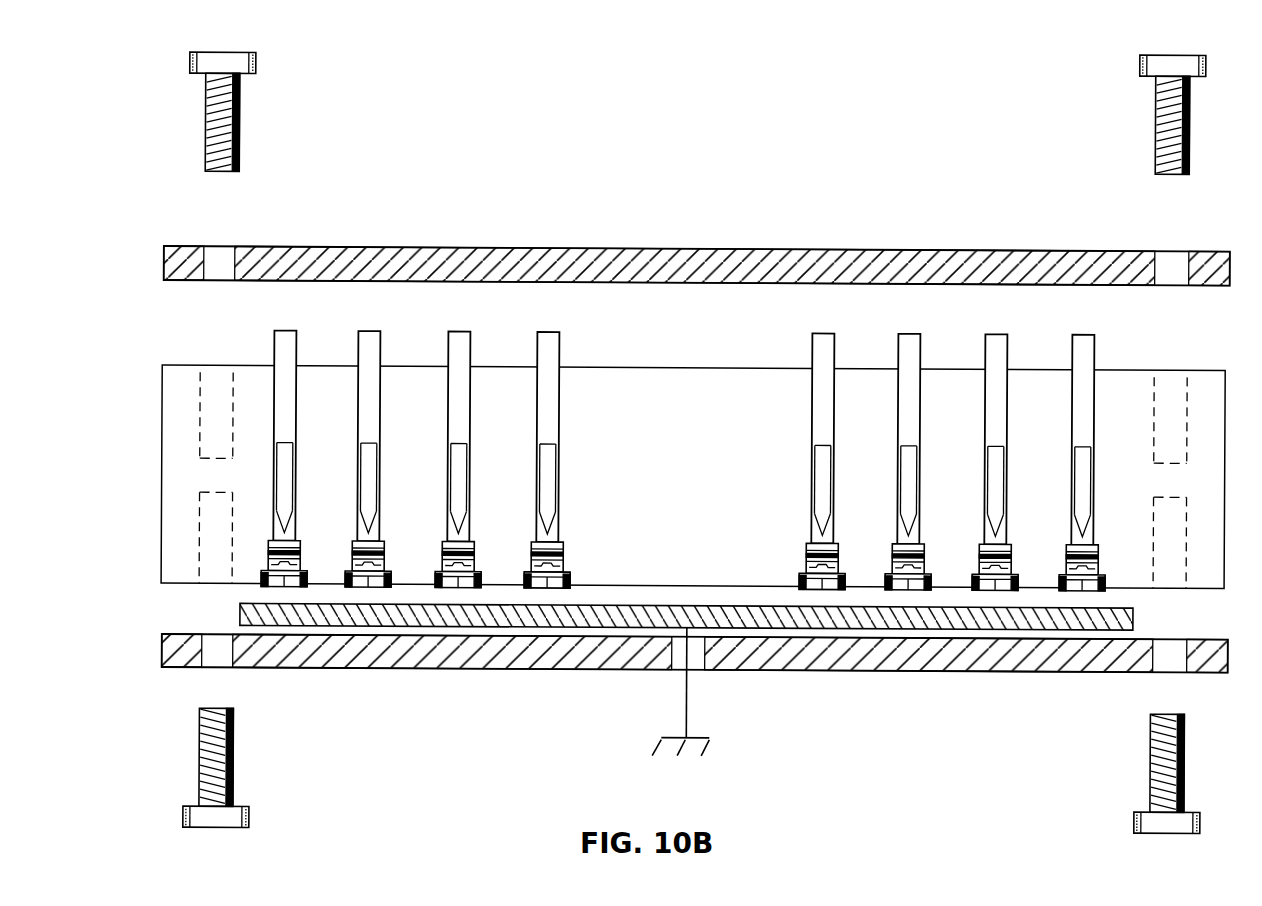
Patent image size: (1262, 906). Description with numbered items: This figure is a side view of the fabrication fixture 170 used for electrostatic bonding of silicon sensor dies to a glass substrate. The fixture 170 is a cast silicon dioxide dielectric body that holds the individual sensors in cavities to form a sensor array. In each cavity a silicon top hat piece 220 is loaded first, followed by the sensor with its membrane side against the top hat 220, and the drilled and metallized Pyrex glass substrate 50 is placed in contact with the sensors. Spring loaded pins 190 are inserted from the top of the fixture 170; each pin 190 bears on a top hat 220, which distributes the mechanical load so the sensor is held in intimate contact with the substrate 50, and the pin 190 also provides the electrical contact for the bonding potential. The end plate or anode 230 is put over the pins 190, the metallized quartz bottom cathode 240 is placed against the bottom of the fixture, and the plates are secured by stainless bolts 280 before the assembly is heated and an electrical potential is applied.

The fixture 170 is at (656, 442).
The end plate (anode) 230 is at (697, 218).
The spring loaded pin 190 is at (590, 431).
The top hat piece 220 is at (591, 519).
The glass substrate 50 is at (598, 547).
The metallized quartz bottom cathode 240 is at (608, 610).
The stainless bolts 280 is at (644, 442).